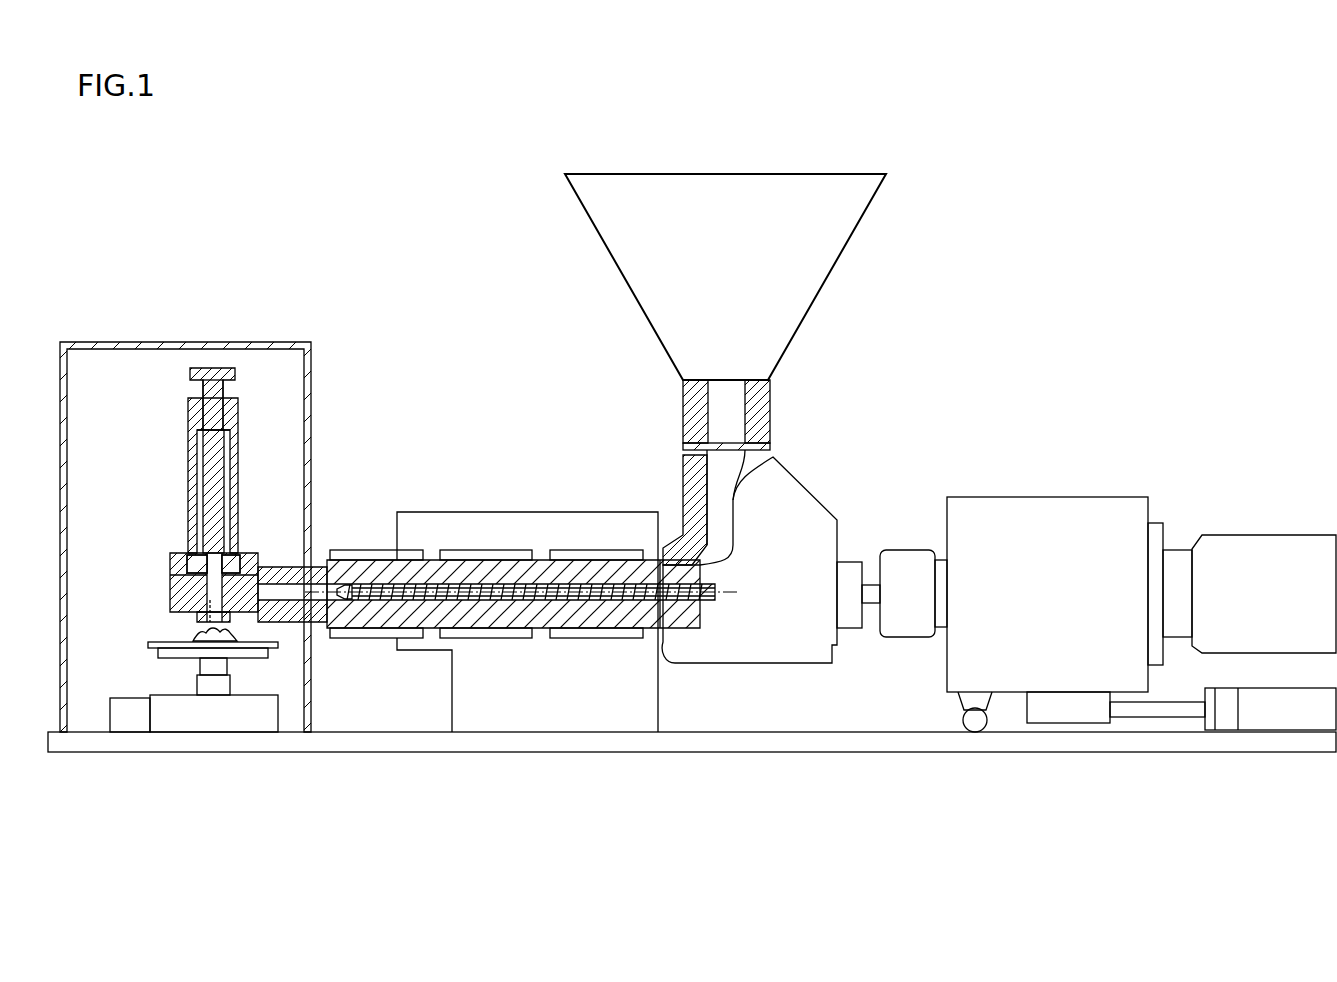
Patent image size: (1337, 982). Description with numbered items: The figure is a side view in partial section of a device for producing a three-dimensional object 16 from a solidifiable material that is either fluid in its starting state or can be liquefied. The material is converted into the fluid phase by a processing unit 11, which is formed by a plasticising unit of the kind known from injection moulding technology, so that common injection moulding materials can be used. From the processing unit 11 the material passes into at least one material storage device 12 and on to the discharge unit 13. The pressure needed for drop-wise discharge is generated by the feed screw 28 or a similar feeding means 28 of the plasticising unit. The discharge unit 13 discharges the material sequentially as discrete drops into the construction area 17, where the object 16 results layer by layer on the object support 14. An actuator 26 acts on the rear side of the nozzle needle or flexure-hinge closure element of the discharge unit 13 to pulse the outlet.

The processing unit 11 is at (827, 472).
The material storage device 12 is at (357, 592).
The discharge unit 13 is at (163, 548).
The object support 14 is at (187, 653).
The three-dimensional object 16 is at (193, 638).
The construction area 17 is at (170, 617).
The actuator 26 is at (207, 462).
The feed screw 28 is at (540, 588).